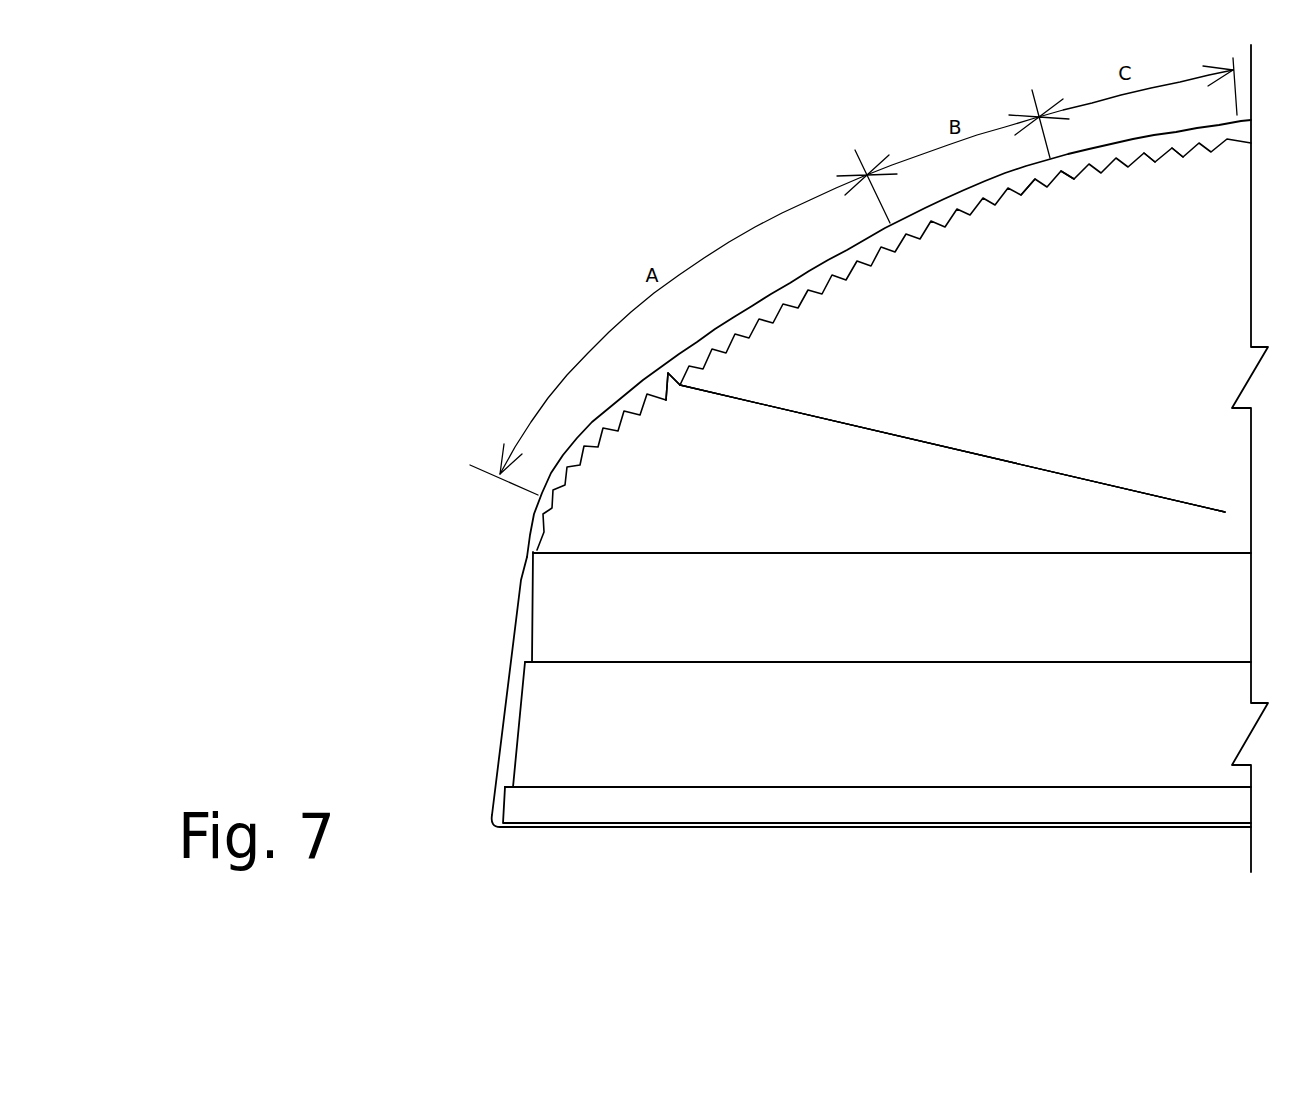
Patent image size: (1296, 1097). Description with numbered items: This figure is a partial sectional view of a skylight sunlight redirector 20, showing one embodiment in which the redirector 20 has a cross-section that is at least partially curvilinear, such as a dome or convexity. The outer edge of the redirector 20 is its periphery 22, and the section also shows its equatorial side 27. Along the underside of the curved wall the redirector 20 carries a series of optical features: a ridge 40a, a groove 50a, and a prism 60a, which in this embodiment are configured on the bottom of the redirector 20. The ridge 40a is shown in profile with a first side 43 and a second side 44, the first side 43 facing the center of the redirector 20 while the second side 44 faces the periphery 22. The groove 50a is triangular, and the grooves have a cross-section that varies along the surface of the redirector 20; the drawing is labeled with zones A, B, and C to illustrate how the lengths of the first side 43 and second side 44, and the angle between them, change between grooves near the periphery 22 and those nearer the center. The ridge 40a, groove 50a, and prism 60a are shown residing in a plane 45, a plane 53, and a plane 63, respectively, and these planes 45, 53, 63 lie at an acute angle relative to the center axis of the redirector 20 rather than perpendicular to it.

The redirector 20 is at (406, 128).
The periphery 22 is at (580, 823).
The equatorial side 27 is at (513, 627).
The ridge 40a is at (681, 386).
The first side 43 is at (681, 376).
The second side 44 is at (668, 378).
The plane 45 is at (917, 440).
The plane 53 is at (917, 440).
The plane 63 is at (917, 440).
The groove 50a is at (1156, 162).
The prism 60a is at (1047, 187).